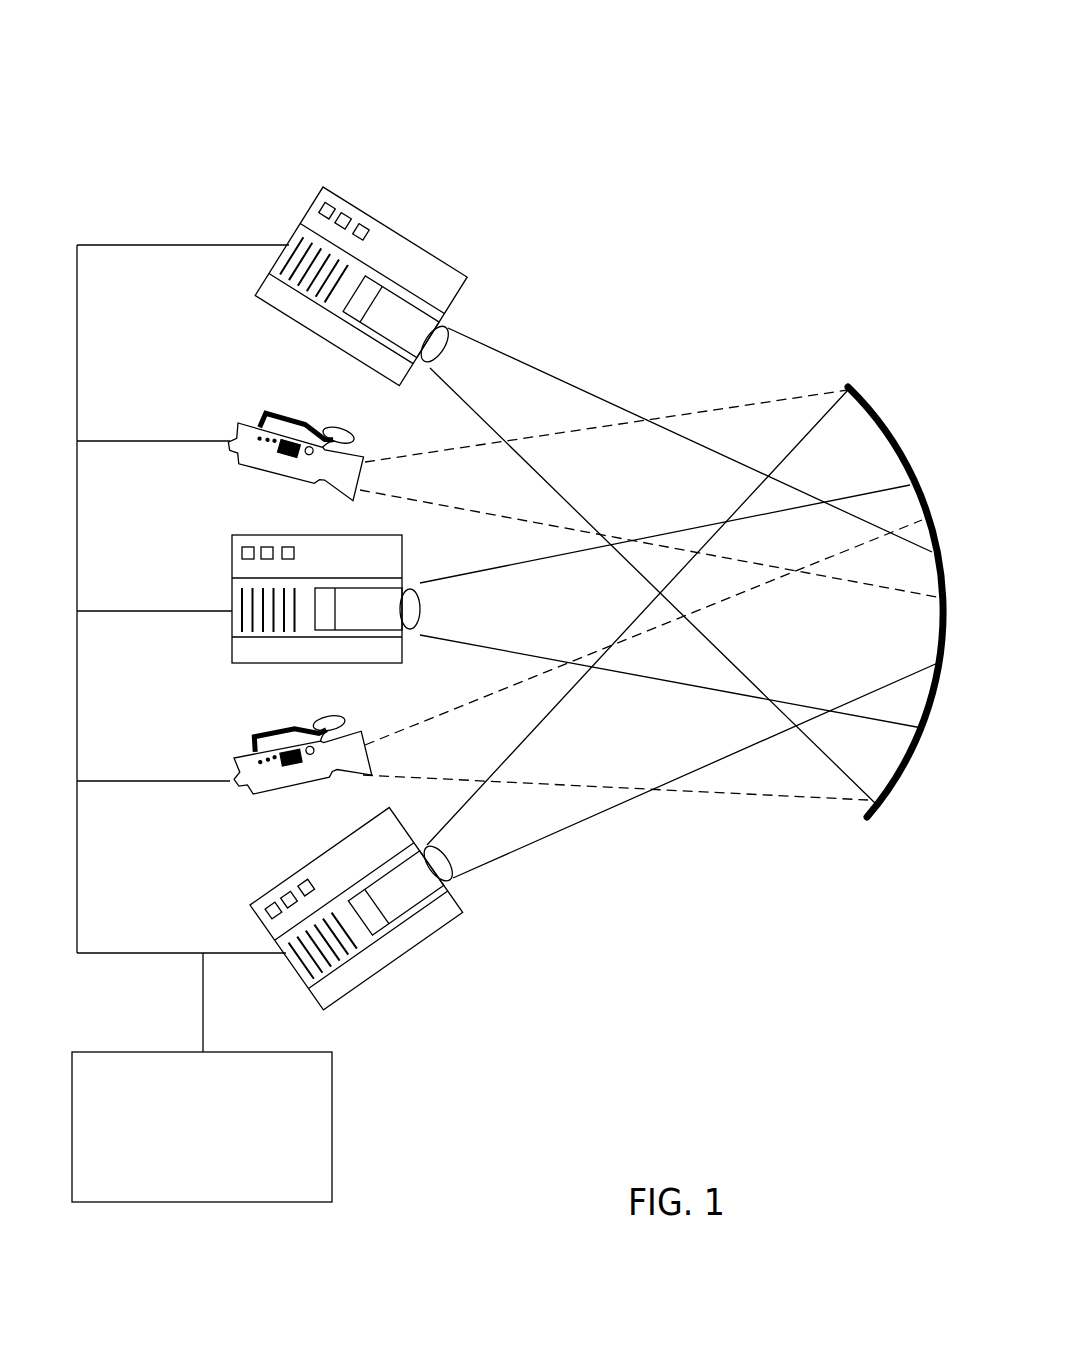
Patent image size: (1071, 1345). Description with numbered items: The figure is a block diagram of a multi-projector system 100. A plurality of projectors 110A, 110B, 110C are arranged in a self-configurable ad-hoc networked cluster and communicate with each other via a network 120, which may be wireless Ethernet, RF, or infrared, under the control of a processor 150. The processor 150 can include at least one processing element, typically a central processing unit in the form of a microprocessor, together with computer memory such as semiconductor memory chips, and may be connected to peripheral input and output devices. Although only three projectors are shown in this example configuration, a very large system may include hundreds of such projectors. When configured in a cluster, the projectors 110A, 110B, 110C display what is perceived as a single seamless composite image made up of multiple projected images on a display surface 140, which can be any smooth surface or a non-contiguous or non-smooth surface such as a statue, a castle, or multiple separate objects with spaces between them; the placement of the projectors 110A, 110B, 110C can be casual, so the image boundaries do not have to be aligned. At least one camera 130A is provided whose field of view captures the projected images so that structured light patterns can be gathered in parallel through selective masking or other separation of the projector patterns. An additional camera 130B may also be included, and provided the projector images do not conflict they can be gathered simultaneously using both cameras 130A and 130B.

The multi-projector system 100 is at (510, 182).
The projector 110A is at (290, 243).
The projector 110B is at (233, 538).
The projector 110C is at (290, 877).
The network 120 is at (130, 245).
The camera 130A is at (268, 414).
The camera 130B is at (256, 738).
The display surface 140 is at (852, 386).
The processor 150 is at (147, 1053).